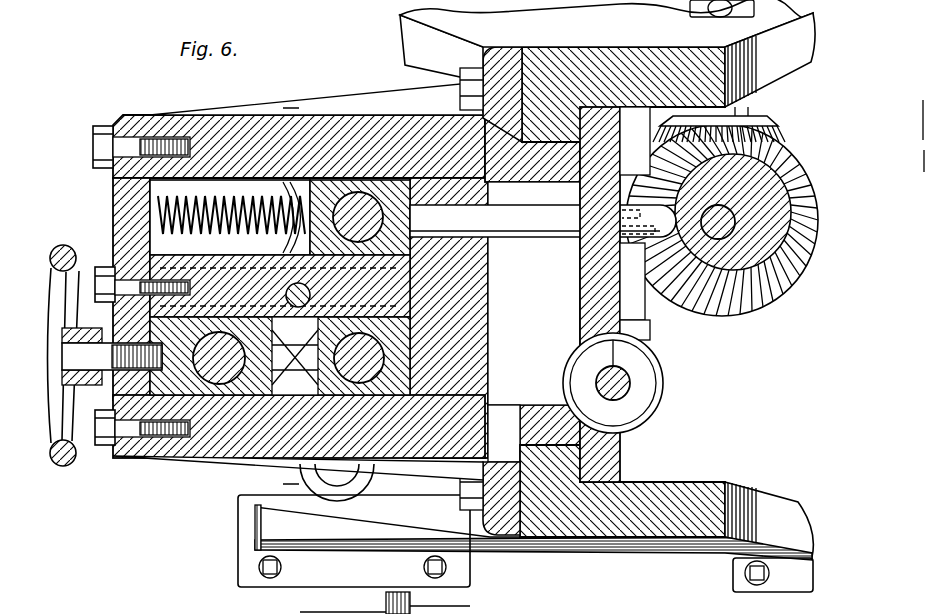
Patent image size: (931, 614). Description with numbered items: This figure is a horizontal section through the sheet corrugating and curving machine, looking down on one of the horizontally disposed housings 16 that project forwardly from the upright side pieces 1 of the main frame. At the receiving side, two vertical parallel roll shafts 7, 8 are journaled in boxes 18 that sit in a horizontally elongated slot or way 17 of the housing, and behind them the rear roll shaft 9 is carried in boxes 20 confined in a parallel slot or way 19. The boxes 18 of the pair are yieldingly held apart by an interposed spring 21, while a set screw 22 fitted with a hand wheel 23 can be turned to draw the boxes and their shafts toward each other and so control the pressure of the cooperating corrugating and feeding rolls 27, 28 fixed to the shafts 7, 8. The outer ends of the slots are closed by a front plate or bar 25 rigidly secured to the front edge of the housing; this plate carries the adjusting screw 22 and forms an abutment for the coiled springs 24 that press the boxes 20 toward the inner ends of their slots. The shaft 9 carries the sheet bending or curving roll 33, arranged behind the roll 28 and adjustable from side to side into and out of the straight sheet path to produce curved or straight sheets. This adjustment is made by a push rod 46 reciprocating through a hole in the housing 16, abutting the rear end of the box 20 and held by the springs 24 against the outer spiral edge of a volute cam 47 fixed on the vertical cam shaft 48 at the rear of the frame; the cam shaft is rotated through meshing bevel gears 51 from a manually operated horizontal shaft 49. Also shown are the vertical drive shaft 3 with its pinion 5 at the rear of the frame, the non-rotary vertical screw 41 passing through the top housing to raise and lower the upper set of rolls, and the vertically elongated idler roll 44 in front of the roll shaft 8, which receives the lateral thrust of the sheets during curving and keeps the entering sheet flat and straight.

The side pieces 1 is at (425, 62).
The vertical rotary shaft 3 is at (632, 386).
The pinion 5 is at (291, 170).
The roll shaft 7 is at (280, 356).
The roll shaft 8 is at (359, 358).
The roll shaft 9 is at (360, 217).
The housings 16 is at (488, 324).
The slots or ways 17 is at (114, 458).
The boxes 18 is at (405, 381).
The slots or ways 19 is at (269, 217).
The boxes 20 is at (428, 212).
The spring 21 is at (295, 356).
The set screw 22 is at (80, 356).
The hand wheel 23 is at (68, 247).
The coiled springs 24 is at (230, 214).
The front plates or bars 25 is at (122, 115).
The corrugating and feeding roll 27 is at (247, 458).
The corrugating and feeding roll 28 is at (488, 406).
The sheet bending or curving roll 33 is at (316, 288).
The vertical screw 41 is at (290, 290).
The idler roll 44 is at (346, 505).
The push rods 46 is at (540, 230).
The volute cams 47 is at (768, 154).
The cam shaft 48 is at (746, 196).
The horizontal shaft 49 is at (724, 9).
The bevel gears 51 is at (755, 126).